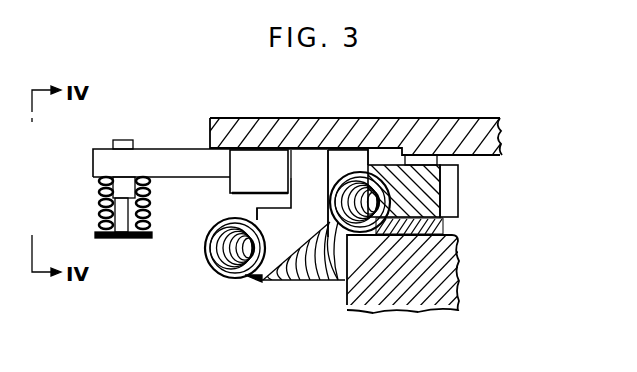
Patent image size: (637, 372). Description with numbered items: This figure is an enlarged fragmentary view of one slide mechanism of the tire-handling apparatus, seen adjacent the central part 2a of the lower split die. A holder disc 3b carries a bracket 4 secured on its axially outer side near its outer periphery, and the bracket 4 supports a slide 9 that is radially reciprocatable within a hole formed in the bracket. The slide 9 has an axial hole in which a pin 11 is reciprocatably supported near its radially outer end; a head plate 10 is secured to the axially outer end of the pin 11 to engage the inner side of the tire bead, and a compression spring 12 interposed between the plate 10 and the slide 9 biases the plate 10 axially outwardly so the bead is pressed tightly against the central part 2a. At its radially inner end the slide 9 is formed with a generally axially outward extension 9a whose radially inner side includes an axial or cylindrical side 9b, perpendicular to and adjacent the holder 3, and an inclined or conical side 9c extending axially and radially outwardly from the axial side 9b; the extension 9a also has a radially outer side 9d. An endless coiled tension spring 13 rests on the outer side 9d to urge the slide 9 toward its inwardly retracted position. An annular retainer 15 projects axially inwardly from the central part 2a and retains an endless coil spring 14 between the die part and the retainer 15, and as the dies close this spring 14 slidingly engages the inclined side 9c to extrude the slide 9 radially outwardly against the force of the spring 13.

The central part 2a is at (402, 306).
The holder 3 is at (404, 121).
The holder disc 3b is at (498, 123).
The bracket 4 is at (247, 175).
The slide 9 is at (268, 214).
The extension 9a is at (307, 177).
The axial side 9b is at (353, 173).
The inclined side 9c is at (308, 282).
The radially outer side 9d is at (249, 282).
The head plate 10 is at (108, 238).
The pin 11 is at (122, 228).
The compression spring 12 is at (99, 196).
The endless coiled tension spring 13 is at (223, 280).
The endless coil spring 14 is at (355, 175).
The annular retainer 15 is at (458, 192).